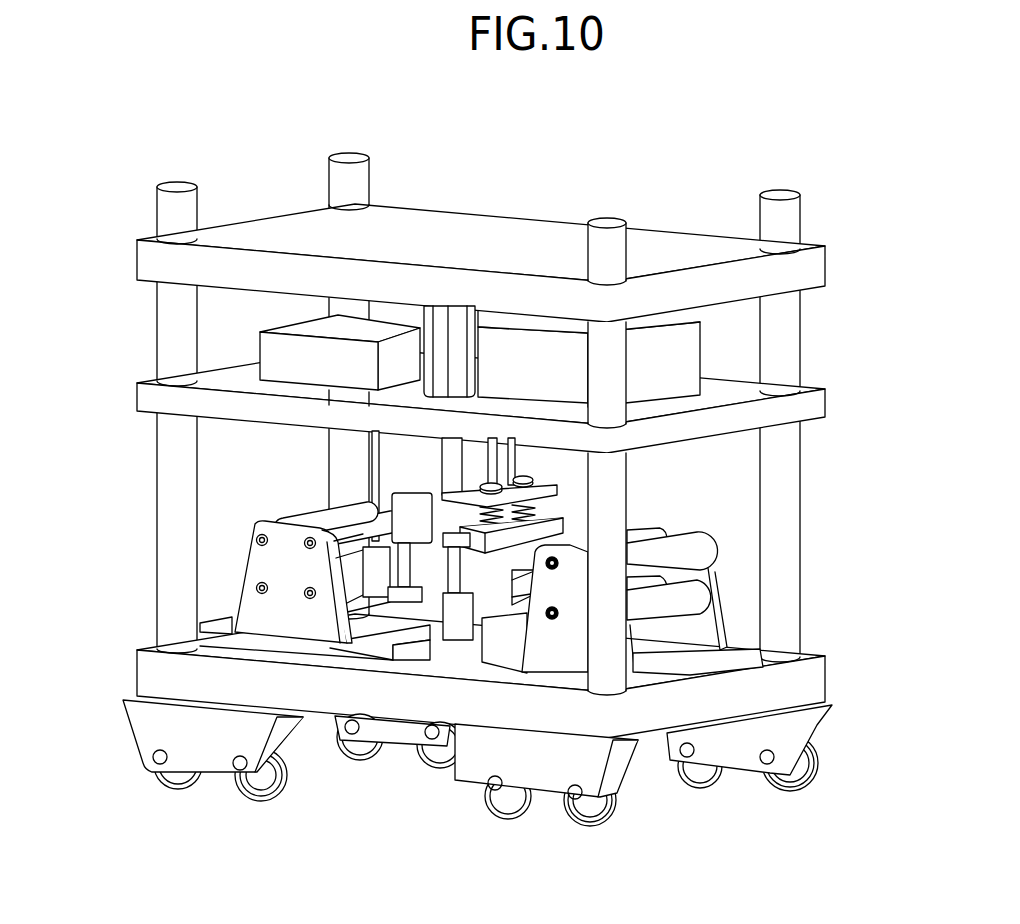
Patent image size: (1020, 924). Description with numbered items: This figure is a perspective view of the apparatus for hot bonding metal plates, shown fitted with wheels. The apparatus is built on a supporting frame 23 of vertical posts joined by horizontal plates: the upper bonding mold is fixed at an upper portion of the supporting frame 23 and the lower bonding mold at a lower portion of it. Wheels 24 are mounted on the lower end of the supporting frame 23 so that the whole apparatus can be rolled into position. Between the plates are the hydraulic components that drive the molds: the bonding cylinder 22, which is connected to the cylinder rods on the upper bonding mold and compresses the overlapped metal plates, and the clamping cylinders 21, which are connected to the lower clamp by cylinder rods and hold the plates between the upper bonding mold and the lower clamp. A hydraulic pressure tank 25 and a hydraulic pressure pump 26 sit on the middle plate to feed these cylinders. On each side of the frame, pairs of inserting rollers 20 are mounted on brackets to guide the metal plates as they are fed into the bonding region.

The inserting roller 20 is at (355, 517).
The clamping cylinder 21 is at (405, 508).
The bonding cylinder 22 is at (455, 330).
The supporting frame 23 is at (173, 567).
The wheel 24 is at (280, 796).
The hydraulic pressure tank 25 is at (677, 362).
The hydraulic pressure pump 26 is at (276, 354).